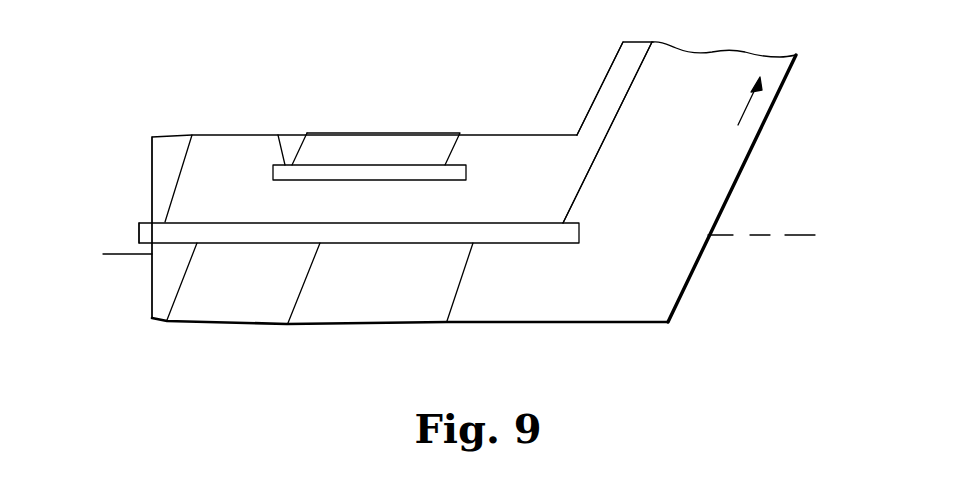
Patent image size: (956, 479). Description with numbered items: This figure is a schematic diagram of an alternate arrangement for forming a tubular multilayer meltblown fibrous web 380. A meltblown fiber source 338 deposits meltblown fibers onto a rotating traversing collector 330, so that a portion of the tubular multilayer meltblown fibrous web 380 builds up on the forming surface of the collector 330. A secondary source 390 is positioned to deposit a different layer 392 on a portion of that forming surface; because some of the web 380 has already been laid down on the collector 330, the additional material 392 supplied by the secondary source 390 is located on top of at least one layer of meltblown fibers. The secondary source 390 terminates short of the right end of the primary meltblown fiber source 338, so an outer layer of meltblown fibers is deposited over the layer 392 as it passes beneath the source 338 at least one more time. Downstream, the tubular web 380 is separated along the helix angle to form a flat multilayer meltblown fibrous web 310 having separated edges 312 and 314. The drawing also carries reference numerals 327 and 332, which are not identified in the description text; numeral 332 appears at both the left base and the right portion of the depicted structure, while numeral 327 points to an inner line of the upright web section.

The flat multilayer meltblown fibrous web 310 is at (710, 57).
The separated edge 312 is at (594, 97).
The separated edge 314 is at (780, 91).
The edge 327 is at (628, 92).
The rotating traversing collector 330 is at (150, 292).
The base plate 332 is at (122, 253).
The meltblown fiber source 338 is at (138, 222).
The tubular multilayer meltblown fibrous web 380 is at (223, 152).
The secondary source 390 is at (283, 163).
The different layer 392 is at (388, 145).